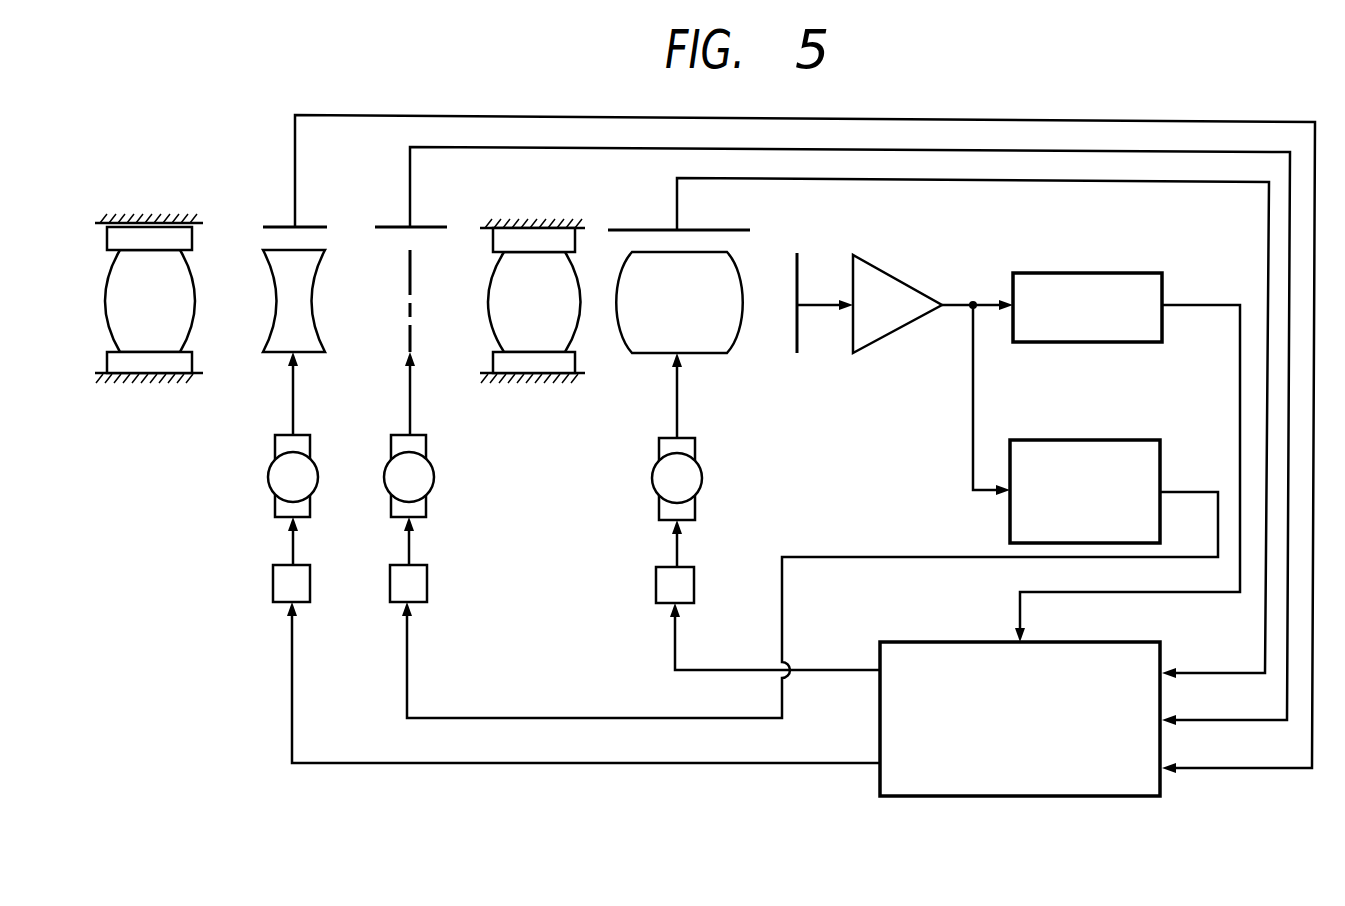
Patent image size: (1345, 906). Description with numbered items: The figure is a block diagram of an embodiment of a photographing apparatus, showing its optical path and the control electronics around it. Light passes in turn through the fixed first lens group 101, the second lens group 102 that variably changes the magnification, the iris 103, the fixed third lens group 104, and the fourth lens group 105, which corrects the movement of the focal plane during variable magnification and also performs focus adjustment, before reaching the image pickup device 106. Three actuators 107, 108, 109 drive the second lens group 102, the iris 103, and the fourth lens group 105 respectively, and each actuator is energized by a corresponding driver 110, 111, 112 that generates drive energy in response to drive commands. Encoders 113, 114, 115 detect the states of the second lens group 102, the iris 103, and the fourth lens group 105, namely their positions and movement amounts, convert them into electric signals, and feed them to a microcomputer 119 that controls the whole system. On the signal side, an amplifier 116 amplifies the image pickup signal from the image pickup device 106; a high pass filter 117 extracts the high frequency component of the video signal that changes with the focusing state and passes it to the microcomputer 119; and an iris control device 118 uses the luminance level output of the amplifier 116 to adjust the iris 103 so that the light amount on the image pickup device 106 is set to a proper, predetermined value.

The fixed first lens group 101 is at (190, 332).
The second lens group 102 is at (320, 330).
The iris 103 is at (413, 268).
The fixed third lens group 104 is at (573, 330).
The fourth lens group 105 is at (738, 335).
The image pickup device 106 is at (798, 270).
The actuator 107 is at (268, 482).
The actuator 108 is at (434, 484).
The actuator 109 is at (652, 484).
The driver 110 is at (273, 585).
The driver 111 is at (427, 585).
The driver 112 is at (656, 588).
The encoder 113 is at (310, 226).
The encoder 114 is at (427, 226).
The encoder 115 is at (715, 229).
The amplifier 116 is at (913, 283).
The high pass filter (HPF) 117 is at (1085, 273).
The iris control device 118 is at (1112, 440).
The microcomputer 119 is at (932, 642).